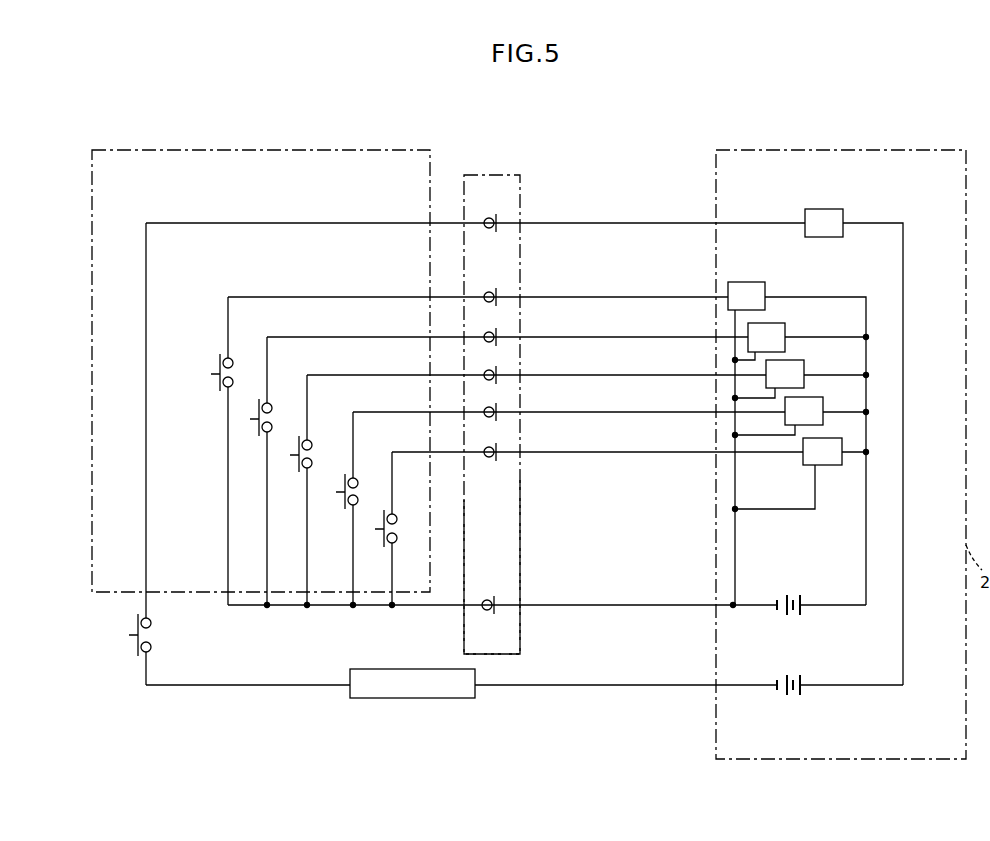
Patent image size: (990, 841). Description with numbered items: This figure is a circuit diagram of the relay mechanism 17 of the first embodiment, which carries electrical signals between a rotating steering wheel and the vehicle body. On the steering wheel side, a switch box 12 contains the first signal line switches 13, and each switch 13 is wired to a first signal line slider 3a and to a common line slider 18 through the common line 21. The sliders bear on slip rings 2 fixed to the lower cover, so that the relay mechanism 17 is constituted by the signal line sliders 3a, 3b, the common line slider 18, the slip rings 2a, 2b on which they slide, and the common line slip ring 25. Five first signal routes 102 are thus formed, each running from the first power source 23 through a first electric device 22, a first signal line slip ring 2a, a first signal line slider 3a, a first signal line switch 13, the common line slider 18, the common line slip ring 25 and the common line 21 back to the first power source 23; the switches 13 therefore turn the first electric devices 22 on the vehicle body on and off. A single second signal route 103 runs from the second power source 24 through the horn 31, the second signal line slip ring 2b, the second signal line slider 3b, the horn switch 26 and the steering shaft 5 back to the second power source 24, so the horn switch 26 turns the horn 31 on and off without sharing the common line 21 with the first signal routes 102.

The slip rings 2 is at (498, 216).
The first signal line slip ring 2a is at (500, 334).
The second signal line slip ring 2b is at (500, 228).
The first signal line slider 3a is at (484, 294).
The second signal line slider 3b is at (484, 220).
The steering shaft 5 is at (350, 680).
The switch box 12 is at (360, 150).
The first signal line switch 13 is at (218, 362).
The relay mechanism 17 is at (520, 500).
The common line slider 18 is at (482, 610).
The common line 21 is at (647, 605).
The first electric device 22 is at (772, 310).
The first power source 23 is at (789, 597).
The second power source 24 is at (789, 676).
The common line slip ring 25 is at (496, 598).
The horn switch 26 is at (138, 624).
The horn 31 is at (826, 214).
The first signal routes 102 is at (662, 298).
The second signal route 103 is at (645, 222).